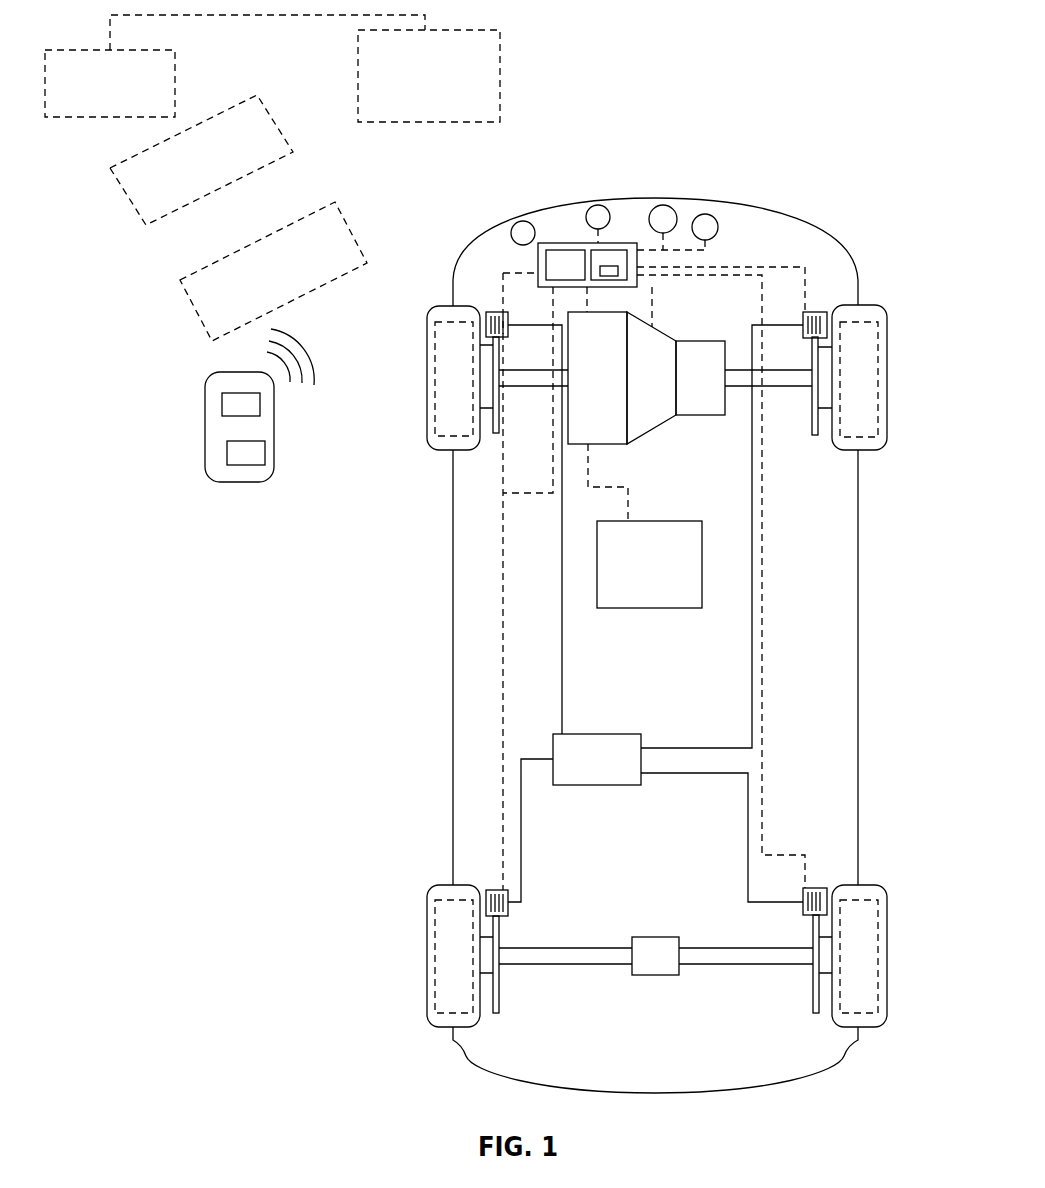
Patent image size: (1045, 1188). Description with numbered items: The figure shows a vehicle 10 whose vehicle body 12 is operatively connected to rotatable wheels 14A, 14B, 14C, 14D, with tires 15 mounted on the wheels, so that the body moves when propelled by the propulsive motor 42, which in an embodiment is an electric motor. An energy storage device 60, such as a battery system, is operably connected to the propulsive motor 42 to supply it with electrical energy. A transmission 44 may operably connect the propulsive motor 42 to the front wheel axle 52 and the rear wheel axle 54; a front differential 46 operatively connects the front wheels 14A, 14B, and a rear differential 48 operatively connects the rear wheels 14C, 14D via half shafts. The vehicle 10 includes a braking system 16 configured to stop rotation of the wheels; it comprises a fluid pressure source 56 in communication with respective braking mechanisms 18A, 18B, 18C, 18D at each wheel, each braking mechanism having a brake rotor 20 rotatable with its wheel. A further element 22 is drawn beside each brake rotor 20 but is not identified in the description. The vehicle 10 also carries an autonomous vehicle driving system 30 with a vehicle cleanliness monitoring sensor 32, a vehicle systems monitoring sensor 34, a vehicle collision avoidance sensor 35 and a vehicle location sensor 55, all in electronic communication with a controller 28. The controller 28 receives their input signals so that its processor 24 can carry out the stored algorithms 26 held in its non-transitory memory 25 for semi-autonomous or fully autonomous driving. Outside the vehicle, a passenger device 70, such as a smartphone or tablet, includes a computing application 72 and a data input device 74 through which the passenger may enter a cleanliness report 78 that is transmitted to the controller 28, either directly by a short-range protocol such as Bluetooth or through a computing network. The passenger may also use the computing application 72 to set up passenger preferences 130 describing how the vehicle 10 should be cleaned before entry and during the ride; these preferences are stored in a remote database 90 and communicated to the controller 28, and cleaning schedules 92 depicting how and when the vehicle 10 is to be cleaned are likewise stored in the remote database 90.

The vehicle 10 is at (655, 611).
The vehicle body 12 is at (828, 245).
The front wheel 14A is at (427, 348).
The front wheel 14B is at (888, 345).
The rear wheel 14C is at (427, 913).
The rear wheel 14D is at (888, 922).
The tire 15 is at (427, 422).
The braking system 16 is at (655, 613).
The braking mechanism 18A is at (457, 274).
The braking mechanism 18B is at (855, 273).
The braking mechanism 18C is at (577, 871).
The braking mechanism 18D is at (858, 853).
The brake rotor 20 is at (500, 413).
The wheel speed sensor 22 is at (497, 338).
The processor 24 is at (631, 524).
The memory 25 is at (612, 247).
The stored algorithm 26 is at (610, 282).
The controller 28 is at (590, 243).
The autonomous vehicle driving system 30 is at (612, 187).
The vehicle cleanliness monitoring sensor 32 is at (523, 221).
The vehicle systems monitoring sensor 34 is at (598, 205).
The vehicle collision avoidance sensor 35 is at (667, 205).
The propulsive motor 42 is at (611, 393).
The transmission 44 is at (664, 393).
The front differential 46 is at (712, 393).
The rear differential 48 is at (667, 967).
The front wheel axle 52 is at (507, 388).
The rear wheel axle 54 is at (553, 966).
The vehicle location sensor 55 is at (718, 228).
The fluid pressure source 56 is at (607, 770).
The energy storage device 60 is at (661, 579).
The passenger device 70 is at (245, 405).
The computing application 72 is at (260, 403).
The data input device 74 is at (265, 450).
The cleanliness report 78 is at (335, 202).
The remote database 90 is at (502, 63).
The cleaning schedules 92 is at (93, 118).
The passenger preferences 130 is at (245, 97).